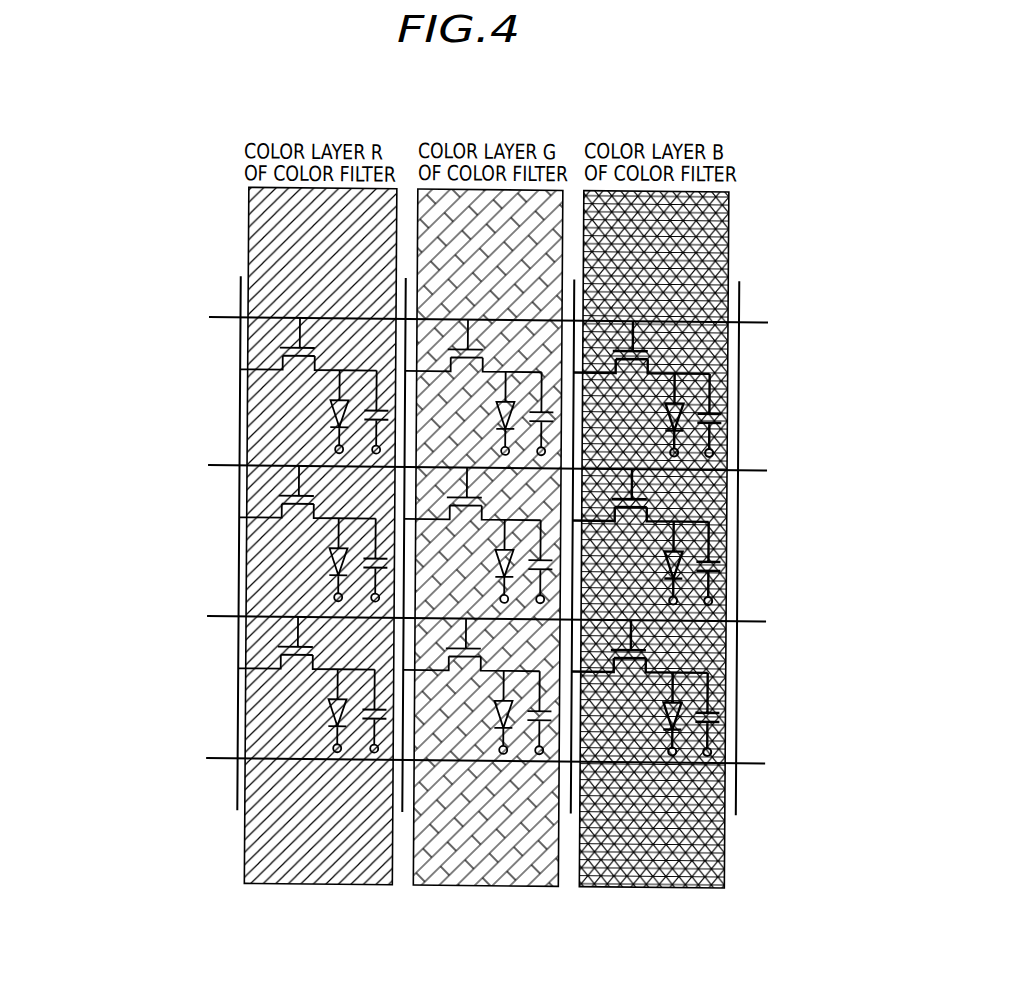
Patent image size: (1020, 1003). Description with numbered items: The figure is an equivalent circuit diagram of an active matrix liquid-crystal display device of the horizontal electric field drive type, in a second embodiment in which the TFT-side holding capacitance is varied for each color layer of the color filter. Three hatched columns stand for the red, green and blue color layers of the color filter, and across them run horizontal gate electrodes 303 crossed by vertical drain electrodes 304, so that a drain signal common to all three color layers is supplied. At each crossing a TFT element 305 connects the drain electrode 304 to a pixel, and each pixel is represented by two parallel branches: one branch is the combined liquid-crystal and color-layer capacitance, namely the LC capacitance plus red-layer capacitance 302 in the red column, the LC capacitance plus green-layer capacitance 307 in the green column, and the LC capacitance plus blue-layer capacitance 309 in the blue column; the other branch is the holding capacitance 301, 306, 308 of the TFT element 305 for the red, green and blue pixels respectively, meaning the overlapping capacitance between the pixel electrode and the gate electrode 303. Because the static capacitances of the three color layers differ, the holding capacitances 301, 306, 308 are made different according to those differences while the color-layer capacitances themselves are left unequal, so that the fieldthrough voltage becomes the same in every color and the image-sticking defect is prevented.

The holding capacitance 301 is at (381, 405).
The LC capacitance plus red-layer capacitance 302 is at (331, 408).
The gate electrode 303 is at (245, 316).
The drain electrode 304 is at (240, 386).
The TFT element 305 is at (282, 346).
The holding capacitance 306 is at (545, 405).
The LC capacitance plus green-layer capacitance 307 is at (501, 407).
The holding capacitance of TFT element 308 is at (711, 404).
The LC capacitance plus blue-layer capacitance 309 is at (666, 406).